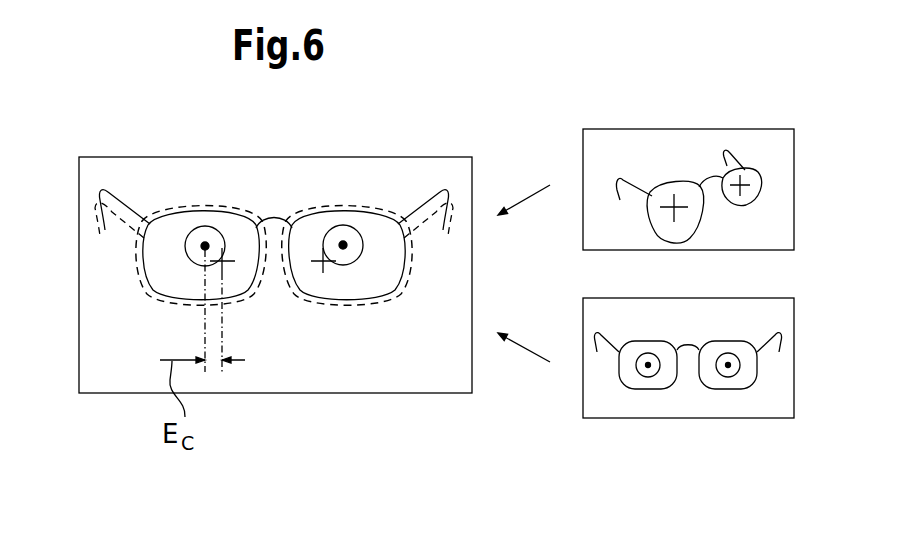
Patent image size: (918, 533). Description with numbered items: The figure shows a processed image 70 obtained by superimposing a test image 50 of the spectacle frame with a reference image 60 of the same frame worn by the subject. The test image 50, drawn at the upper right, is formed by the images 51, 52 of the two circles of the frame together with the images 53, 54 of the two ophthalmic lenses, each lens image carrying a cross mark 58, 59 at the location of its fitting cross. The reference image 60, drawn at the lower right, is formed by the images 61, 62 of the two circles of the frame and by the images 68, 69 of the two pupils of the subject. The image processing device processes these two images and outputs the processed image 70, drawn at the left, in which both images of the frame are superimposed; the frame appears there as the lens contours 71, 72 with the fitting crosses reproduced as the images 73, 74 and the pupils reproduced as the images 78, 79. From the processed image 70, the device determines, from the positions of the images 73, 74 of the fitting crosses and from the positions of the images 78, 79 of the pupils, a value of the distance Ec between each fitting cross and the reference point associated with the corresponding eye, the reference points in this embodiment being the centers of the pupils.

The test image 50 is at (590, 122).
The image of first circle of the frame 51 is at (668, 186).
The image of second circle of the frame 52 is at (733, 150).
The image of first ophthalmic lens 53 is at (660, 213).
The image of second ophthalmic lens 54 is at (750, 172).
The left lens center mark 58 is at (684, 209).
The right lens center mark 59 is at (746, 188).
The reference image 60 is at (608, 426).
The image of first circle of the frame 61 is at (620, 368).
The image of second circle of the frame 62 is at (743, 338).
The image of first pupil 68 is at (648, 365).
The image of second pupil 69 is at (728, 365).
The processed image 70 is at (112, 400).
The left lens contour 71 is at (173, 228).
The right lens contour 72 is at (377, 225).
The image of first fitting cross 73 is at (228, 268).
The image of second fitting cross 74 is at (325, 270).
The image of first pupil 78 is at (205, 236).
The image of second pupil 79 is at (343, 236).